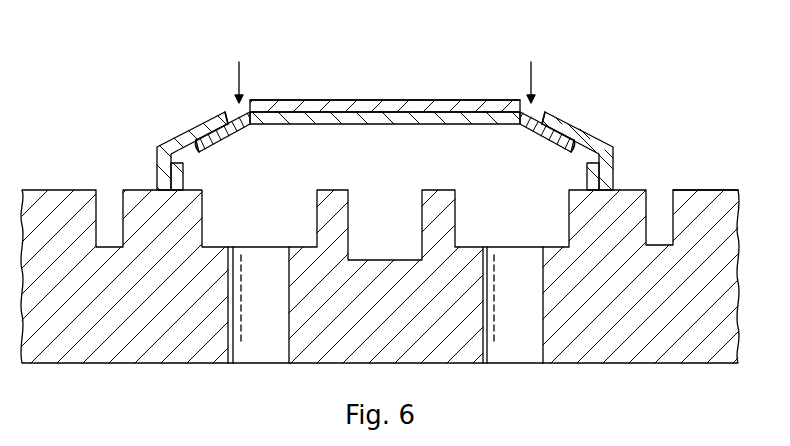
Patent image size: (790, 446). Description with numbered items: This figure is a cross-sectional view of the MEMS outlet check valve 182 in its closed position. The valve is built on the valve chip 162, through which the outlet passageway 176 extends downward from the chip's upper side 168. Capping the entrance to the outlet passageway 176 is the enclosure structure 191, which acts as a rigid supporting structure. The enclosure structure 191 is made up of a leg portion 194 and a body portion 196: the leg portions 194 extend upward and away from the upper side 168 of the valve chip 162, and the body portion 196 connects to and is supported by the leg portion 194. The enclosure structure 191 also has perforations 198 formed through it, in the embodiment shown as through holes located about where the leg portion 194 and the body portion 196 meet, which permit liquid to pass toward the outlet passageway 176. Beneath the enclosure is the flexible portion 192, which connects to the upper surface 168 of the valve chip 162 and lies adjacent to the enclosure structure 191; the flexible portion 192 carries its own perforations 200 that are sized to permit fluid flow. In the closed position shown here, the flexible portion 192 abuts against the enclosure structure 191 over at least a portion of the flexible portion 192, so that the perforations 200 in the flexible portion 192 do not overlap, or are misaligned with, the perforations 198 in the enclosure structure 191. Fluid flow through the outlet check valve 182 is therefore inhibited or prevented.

The valve chip 162 is at (99, 353).
The upper side of the valve chip 168 is at (703, 189).
The outlet passageway 176 is at (287, 343).
The outlet check valve 182 is at (298, 69).
The enclosure structure 191 is at (364, 98).
The flexible portion 192 is at (353, 126).
The leg portion 194 is at (588, 135).
The body portion 196 is at (410, 100).
The perforations 198 is at (232, 108).
The perforations 200 is at (208, 150).